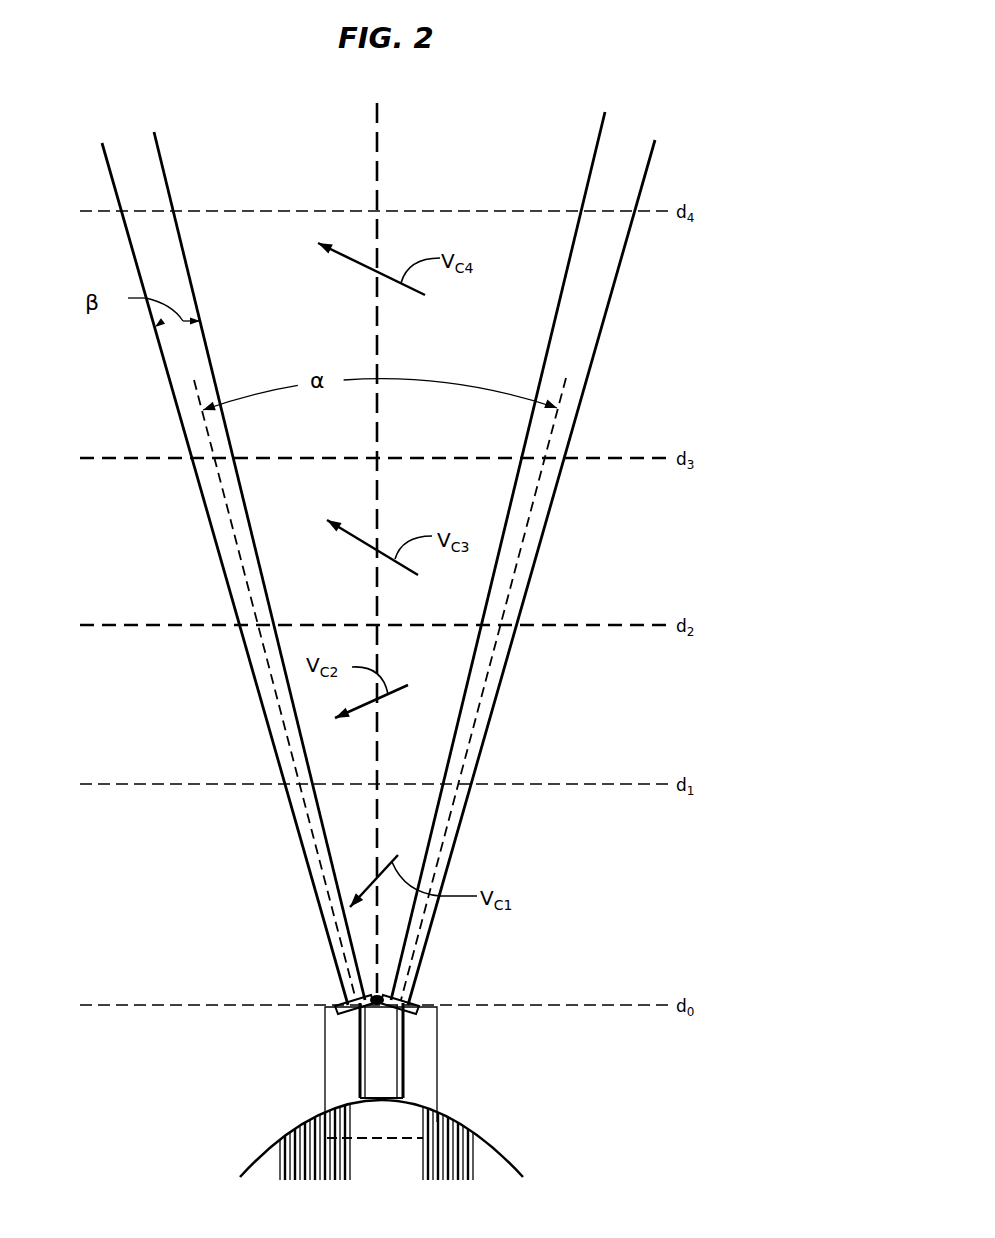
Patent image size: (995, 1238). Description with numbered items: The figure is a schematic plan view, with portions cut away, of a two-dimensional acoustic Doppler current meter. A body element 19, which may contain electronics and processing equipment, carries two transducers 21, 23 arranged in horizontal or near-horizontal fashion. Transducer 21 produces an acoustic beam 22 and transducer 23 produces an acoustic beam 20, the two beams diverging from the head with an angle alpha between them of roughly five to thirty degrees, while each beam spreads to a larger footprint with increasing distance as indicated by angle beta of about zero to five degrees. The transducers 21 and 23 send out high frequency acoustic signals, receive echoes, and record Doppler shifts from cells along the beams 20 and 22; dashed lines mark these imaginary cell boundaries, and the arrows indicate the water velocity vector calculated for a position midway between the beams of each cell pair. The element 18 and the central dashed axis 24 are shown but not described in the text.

The workpiece surface 18 is at (293, 1140).
The body element 19 is at (392, 1050).
The acoustic beam 20 is at (494, 715).
The transducer 21 is at (327, 1017).
The acoustic beam 22 is at (256, 690).
The transducer 23 is at (423, 1017).
The central axis 24 is at (377, 141).